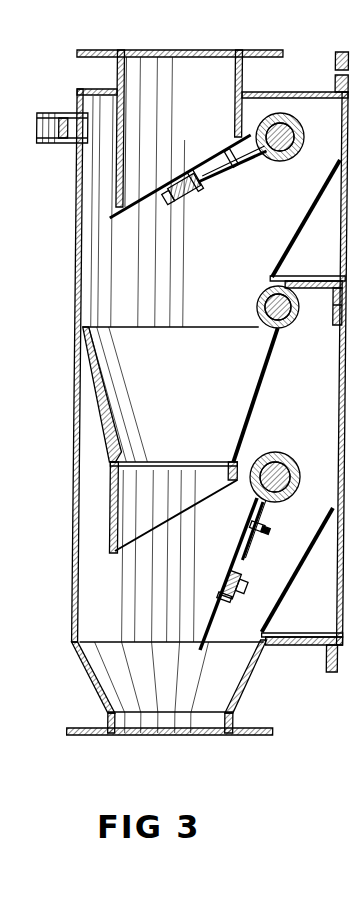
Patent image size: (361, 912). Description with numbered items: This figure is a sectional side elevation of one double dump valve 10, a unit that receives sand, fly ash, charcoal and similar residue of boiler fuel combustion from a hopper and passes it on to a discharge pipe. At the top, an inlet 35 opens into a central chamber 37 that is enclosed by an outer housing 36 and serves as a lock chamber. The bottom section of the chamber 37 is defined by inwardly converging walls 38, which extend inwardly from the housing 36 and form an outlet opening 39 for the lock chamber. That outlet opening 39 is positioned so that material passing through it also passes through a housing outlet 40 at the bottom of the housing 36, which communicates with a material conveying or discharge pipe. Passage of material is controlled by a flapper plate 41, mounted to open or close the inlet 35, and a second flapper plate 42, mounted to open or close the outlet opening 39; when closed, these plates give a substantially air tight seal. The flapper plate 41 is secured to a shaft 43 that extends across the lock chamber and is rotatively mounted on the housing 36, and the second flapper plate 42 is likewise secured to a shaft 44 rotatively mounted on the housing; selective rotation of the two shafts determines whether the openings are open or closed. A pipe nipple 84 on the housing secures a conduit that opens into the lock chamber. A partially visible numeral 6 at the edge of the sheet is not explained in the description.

The double dump valve 10 is at (62, 353).
The inlet 35 is at (190, 57).
The pipe nipple 84 is at (60, 145).
The flapper plate 41 is at (205, 155).
The shaft 43 is at (294, 140).
The central chamber 37 is at (199, 271).
The outer housing 36 is at (349, 282).
The housing flange 6 is at (358, 44).
The inwardly converging walls 38 is at (267, 373).
The outlet opening 39 is at (170, 500).
The shaft 44 is at (273, 471).
The second flapper plate 42 is at (241, 537).
The housing outlet 40 is at (213, 720).